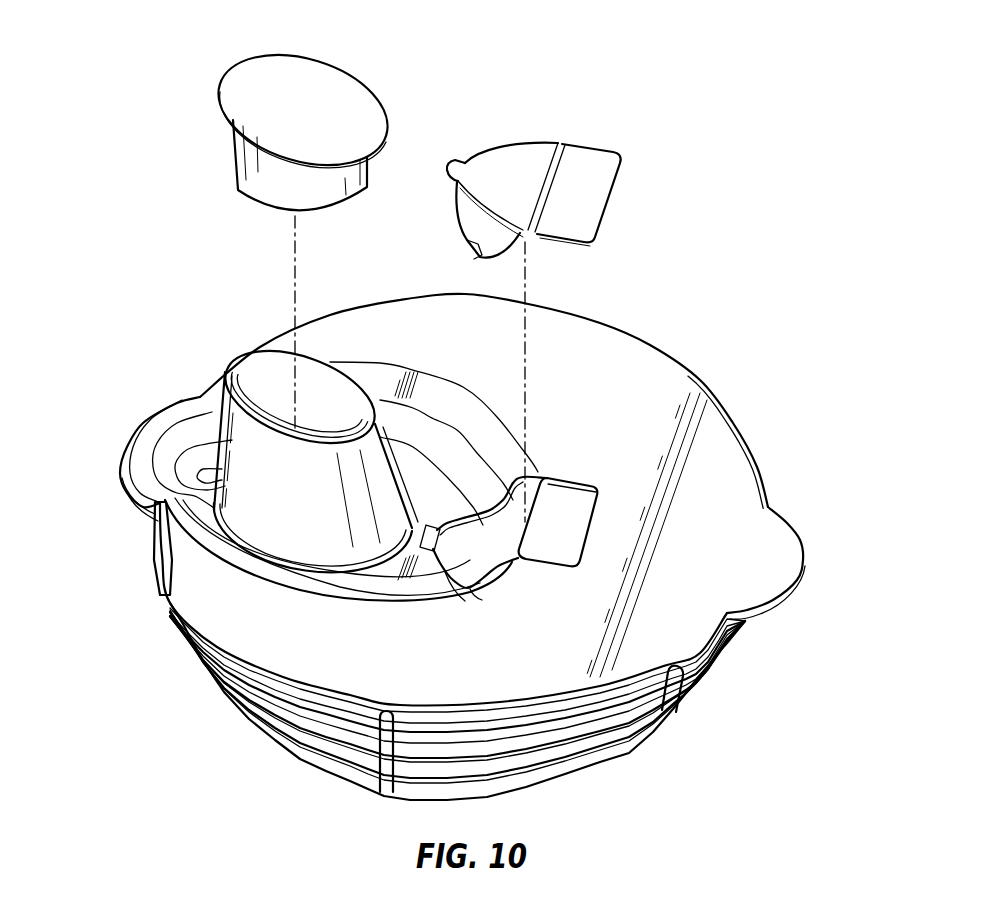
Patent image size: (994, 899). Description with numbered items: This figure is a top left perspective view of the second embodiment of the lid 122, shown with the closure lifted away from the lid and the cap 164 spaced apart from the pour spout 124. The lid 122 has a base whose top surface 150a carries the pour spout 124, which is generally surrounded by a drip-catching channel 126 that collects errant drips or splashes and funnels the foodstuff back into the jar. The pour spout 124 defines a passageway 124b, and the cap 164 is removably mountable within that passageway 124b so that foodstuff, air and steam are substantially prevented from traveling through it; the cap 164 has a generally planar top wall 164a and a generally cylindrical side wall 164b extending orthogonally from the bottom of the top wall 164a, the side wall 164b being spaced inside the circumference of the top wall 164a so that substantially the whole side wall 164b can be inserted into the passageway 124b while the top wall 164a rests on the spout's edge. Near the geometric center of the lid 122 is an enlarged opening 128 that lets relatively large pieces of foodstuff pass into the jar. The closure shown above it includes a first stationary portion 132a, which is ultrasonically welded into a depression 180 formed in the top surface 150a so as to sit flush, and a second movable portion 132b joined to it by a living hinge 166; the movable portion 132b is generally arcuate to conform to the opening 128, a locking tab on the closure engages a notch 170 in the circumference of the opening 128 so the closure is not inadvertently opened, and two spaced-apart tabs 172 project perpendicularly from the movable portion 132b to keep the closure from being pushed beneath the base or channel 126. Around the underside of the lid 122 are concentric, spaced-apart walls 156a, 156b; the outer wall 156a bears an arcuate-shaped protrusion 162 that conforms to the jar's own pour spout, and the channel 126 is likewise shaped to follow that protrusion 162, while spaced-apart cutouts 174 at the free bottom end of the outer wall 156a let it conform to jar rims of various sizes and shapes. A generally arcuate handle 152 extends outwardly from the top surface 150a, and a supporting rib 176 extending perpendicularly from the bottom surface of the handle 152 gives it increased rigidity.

The lid 122 is at (713, 221).
The pour spout 124 is at (255, 442).
The passageway 124b is at (240, 436).
The drip-catching channel 126 is at (413, 445).
The opening 128 is at (534, 544).
The first stationary portion 132a is at (597, 160).
The second movable portion 132b is at (458, 219).
The top surface 150a is at (600, 327).
The handle 152 is at (809, 564).
The outer wall 156a is at (325, 735).
The inner wall 156b is at (585, 775).
The arcuate-shaped protrusion 162 is at (122, 452).
The cap 164 is at (279, 219).
The top wall 164a is at (326, 73).
The side wall 164b is at (230, 143).
The living hinge 166 is at (524, 305).
The notch 170 is at (465, 600).
The tabs 172 is at (438, 267).
The cutouts 174 is at (385, 752).
The supporting rib 176 is at (805, 580).
The depression 180 is at (565, 495).